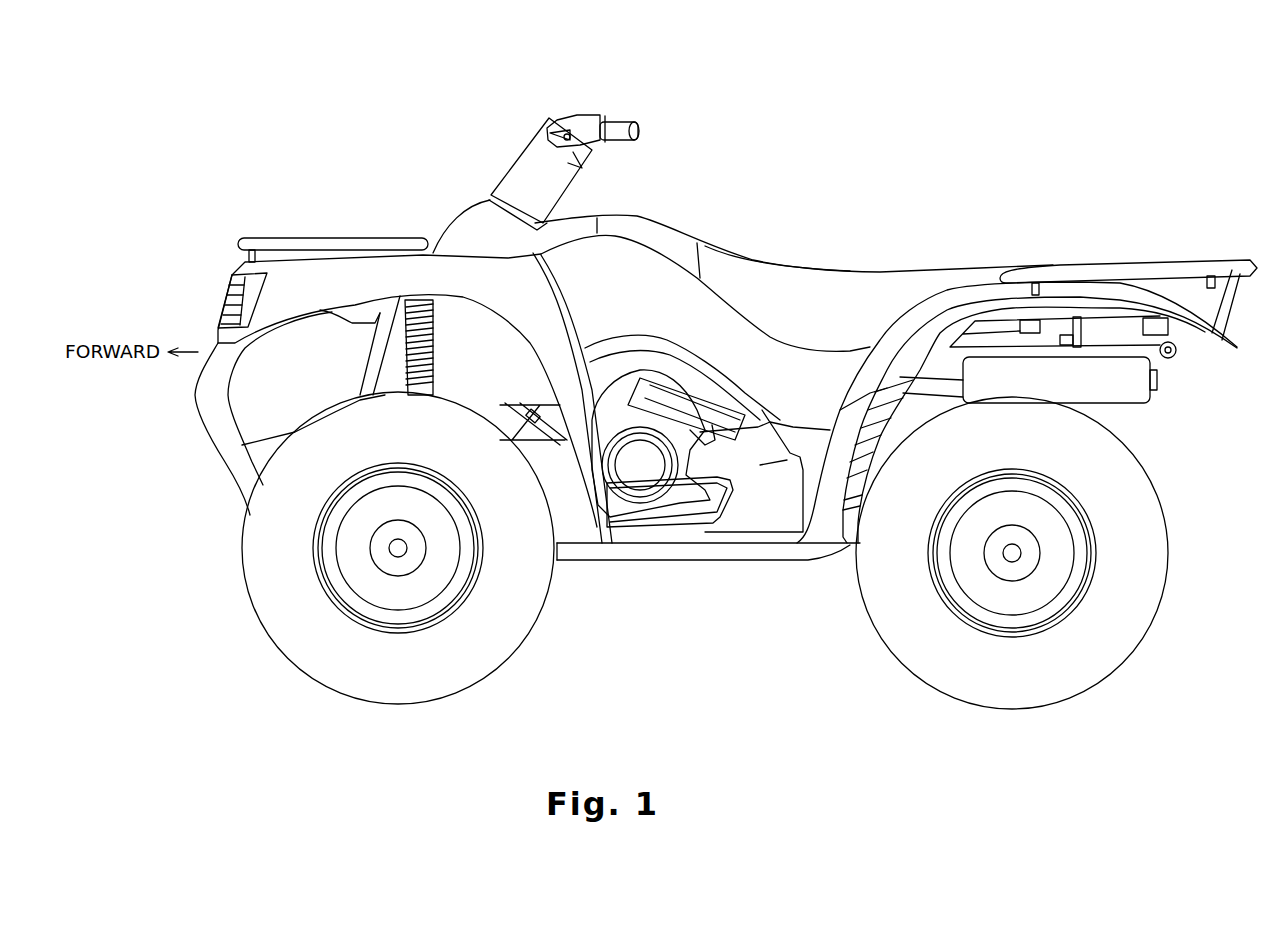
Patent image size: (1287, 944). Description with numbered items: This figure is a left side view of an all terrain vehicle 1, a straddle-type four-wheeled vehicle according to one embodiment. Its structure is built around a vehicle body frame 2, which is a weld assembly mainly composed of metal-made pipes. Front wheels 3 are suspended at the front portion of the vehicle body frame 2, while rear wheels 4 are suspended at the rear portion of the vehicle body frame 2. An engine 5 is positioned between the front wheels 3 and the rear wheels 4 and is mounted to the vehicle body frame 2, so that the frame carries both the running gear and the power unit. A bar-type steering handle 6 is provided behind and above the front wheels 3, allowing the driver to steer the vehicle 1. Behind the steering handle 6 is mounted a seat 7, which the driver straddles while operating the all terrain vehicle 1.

The all terrain vehicle 1 is at (713, 377).
The vehicle body frame 2 is at (693, 560).
The front wheels 3 is at (245, 577).
The rear wheels 4 is at (1168, 560).
The engine 5 is at (642, 480).
The steering handle 6 is at (620, 120).
The seat 7 is at (805, 267).